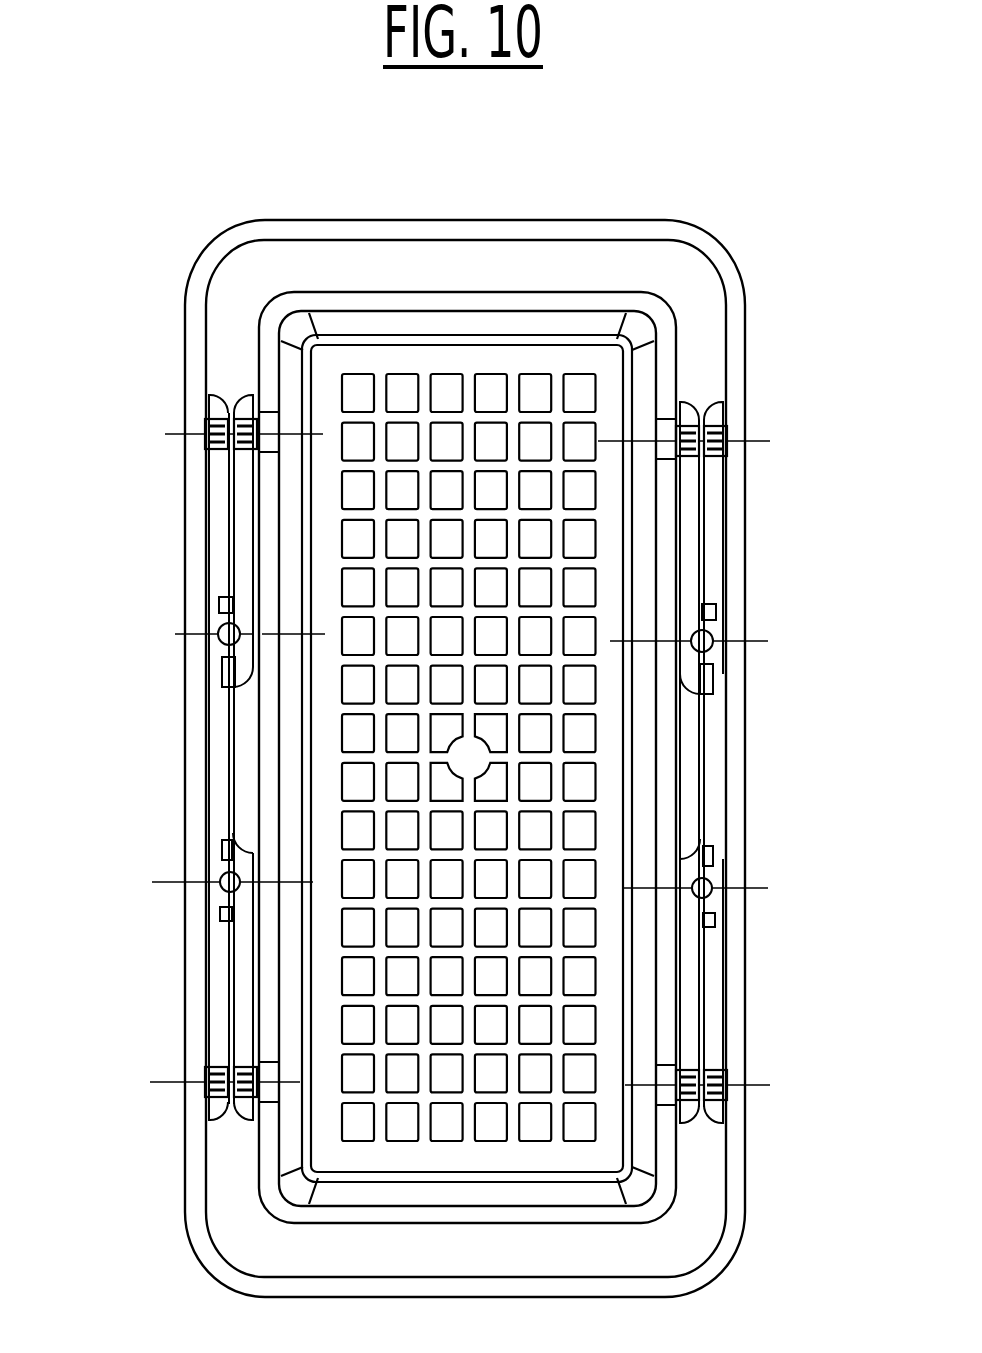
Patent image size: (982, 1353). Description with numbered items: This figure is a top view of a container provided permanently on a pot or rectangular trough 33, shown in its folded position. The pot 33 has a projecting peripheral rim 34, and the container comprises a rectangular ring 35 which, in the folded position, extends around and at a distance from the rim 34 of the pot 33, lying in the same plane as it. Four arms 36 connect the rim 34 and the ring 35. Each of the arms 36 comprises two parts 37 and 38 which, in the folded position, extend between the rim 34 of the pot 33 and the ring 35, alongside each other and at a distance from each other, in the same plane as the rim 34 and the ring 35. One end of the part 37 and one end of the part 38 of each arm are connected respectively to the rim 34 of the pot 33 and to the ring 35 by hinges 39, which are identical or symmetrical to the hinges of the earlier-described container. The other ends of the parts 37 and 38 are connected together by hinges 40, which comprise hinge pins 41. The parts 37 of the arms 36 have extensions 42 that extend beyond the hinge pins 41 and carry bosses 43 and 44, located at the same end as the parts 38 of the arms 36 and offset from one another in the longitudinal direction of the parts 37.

The pot or rectangular trough 33 is at (325, 958).
The peripheral rim 34 is at (663, 780).
The rectangular ring 35 is at (195, 793).
The arms 36 is at (215, 563).
The part of the arms 37 is at (243, 488).
The part of the arms 38 is at (220, 515).
The hinges 39 is at (203, 424).
The hinges 40 is at (212, 660).
The hinge pins 41 is at (222, 625).
The extensions 42 is at (243, 678).
The boss 43 is at (703, 672).
The boss 44 is at (703, 692).